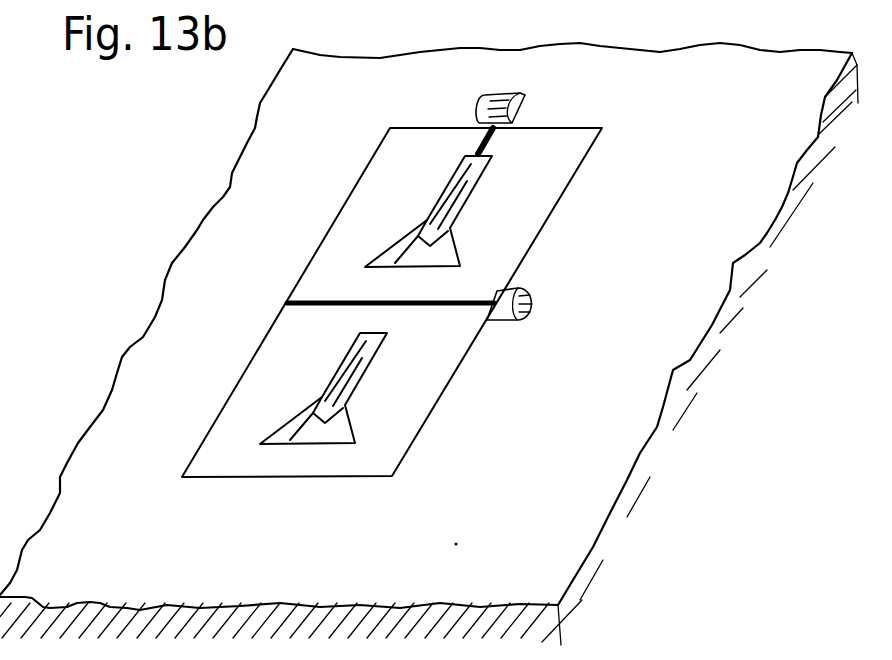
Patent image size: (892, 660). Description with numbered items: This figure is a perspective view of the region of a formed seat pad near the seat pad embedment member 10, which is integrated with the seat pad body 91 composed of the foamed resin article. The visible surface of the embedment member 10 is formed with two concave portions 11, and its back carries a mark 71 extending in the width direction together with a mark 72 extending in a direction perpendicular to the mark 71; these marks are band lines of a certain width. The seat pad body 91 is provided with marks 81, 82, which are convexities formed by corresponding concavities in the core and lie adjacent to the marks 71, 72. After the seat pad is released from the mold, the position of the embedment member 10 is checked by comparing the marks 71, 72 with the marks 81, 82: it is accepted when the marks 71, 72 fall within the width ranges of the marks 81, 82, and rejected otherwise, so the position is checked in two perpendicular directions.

The seat pad embedment member 10 is at (533, 208).
The concave portions 11 is at (388, 240).
The mark 71 is at (438, 308).
The mark 72 is at (494, 137).
The mark 81 is at (522, 284).
The mark 82 is at (480, 98).
The seat pad body 91 is at (610, 420).